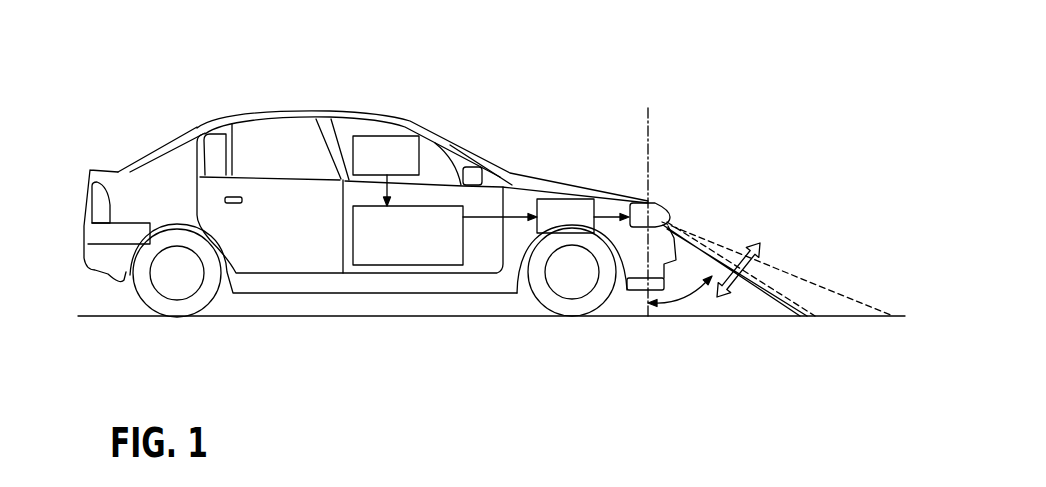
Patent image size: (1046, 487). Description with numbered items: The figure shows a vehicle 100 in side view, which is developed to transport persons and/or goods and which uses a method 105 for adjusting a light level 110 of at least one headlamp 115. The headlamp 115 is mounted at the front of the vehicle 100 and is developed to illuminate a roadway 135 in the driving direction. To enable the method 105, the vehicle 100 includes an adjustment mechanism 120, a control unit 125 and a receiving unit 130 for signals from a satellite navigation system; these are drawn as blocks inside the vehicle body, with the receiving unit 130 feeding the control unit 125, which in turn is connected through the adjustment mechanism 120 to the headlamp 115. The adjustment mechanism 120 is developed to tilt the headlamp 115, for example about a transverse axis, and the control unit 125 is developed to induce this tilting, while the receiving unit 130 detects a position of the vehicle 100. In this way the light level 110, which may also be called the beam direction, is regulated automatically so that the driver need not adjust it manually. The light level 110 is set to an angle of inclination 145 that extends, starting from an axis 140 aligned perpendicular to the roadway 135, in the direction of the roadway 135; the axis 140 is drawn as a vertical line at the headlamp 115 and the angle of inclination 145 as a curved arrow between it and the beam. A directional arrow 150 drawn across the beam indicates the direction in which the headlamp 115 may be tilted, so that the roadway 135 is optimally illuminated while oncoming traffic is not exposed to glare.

The vehicle 100 is at (407, 209).
The method 105 is at (297, 150).
The light level 110 is at (809, 259).
The headlamp 115 is at (658, 211).
The adjustment mechanism 120 is at (565, 217).
The control unit 125 is at (411, 237).
The receiving unit 130 is at (388, 155).
The roadway 135 is at (270, 318).
The axis 140 is at (650, 118).
The angle of inclination 145 is at (684, 298).
The directional arrow 150 is at (747, 285).